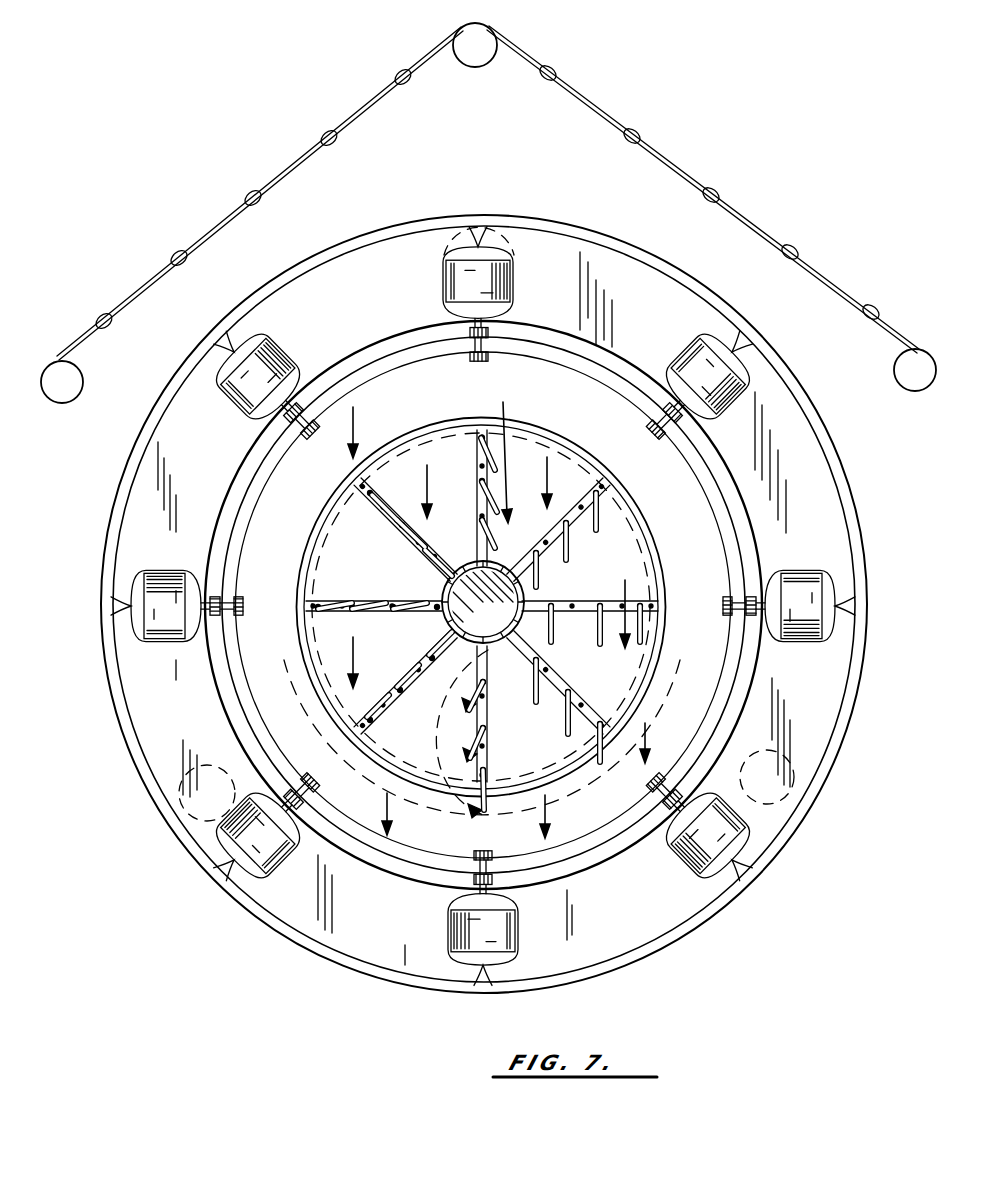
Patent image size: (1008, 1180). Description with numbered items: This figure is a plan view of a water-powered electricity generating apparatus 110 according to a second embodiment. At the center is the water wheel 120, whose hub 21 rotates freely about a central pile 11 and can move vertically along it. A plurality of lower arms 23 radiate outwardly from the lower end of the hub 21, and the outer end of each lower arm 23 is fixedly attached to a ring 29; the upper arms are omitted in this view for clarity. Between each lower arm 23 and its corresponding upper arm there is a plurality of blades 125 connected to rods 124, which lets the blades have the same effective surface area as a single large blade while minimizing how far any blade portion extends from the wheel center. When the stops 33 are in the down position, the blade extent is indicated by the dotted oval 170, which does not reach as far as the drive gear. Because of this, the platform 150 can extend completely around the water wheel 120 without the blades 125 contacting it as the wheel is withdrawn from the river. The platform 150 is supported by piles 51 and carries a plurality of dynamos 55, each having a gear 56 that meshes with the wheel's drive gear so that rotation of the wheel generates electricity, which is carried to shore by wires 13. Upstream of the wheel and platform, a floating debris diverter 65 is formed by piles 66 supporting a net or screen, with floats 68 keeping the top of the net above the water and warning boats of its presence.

The central pile 11 is at (478, 575).
The wires 13 is at (178, 405).
The hub 21 is at (444, 592).
The lower arms 23 is at (480, 500).
The ring 29 is at (642, 514).
The stops 33 is at (535, 615).
The piles 51 is at (520, 240).
The dynamos 55 is at (448, 295).
The gear 56 is at (660, 440).
The floating debris diverter 65 is at (688, 122).
The piles 66 is at (480, 42).
The floats 68 is at (547, 80).
The water-powered electricity generating apparatus 110 is at (298, 135).
The water wheel 120 is at (612, 798).
The rods 124 is at (568, 500).
The blades 125 is at (415, 550).
The platform 150 is at (430, 220).
The dotted oval 170 is at (462, 820).